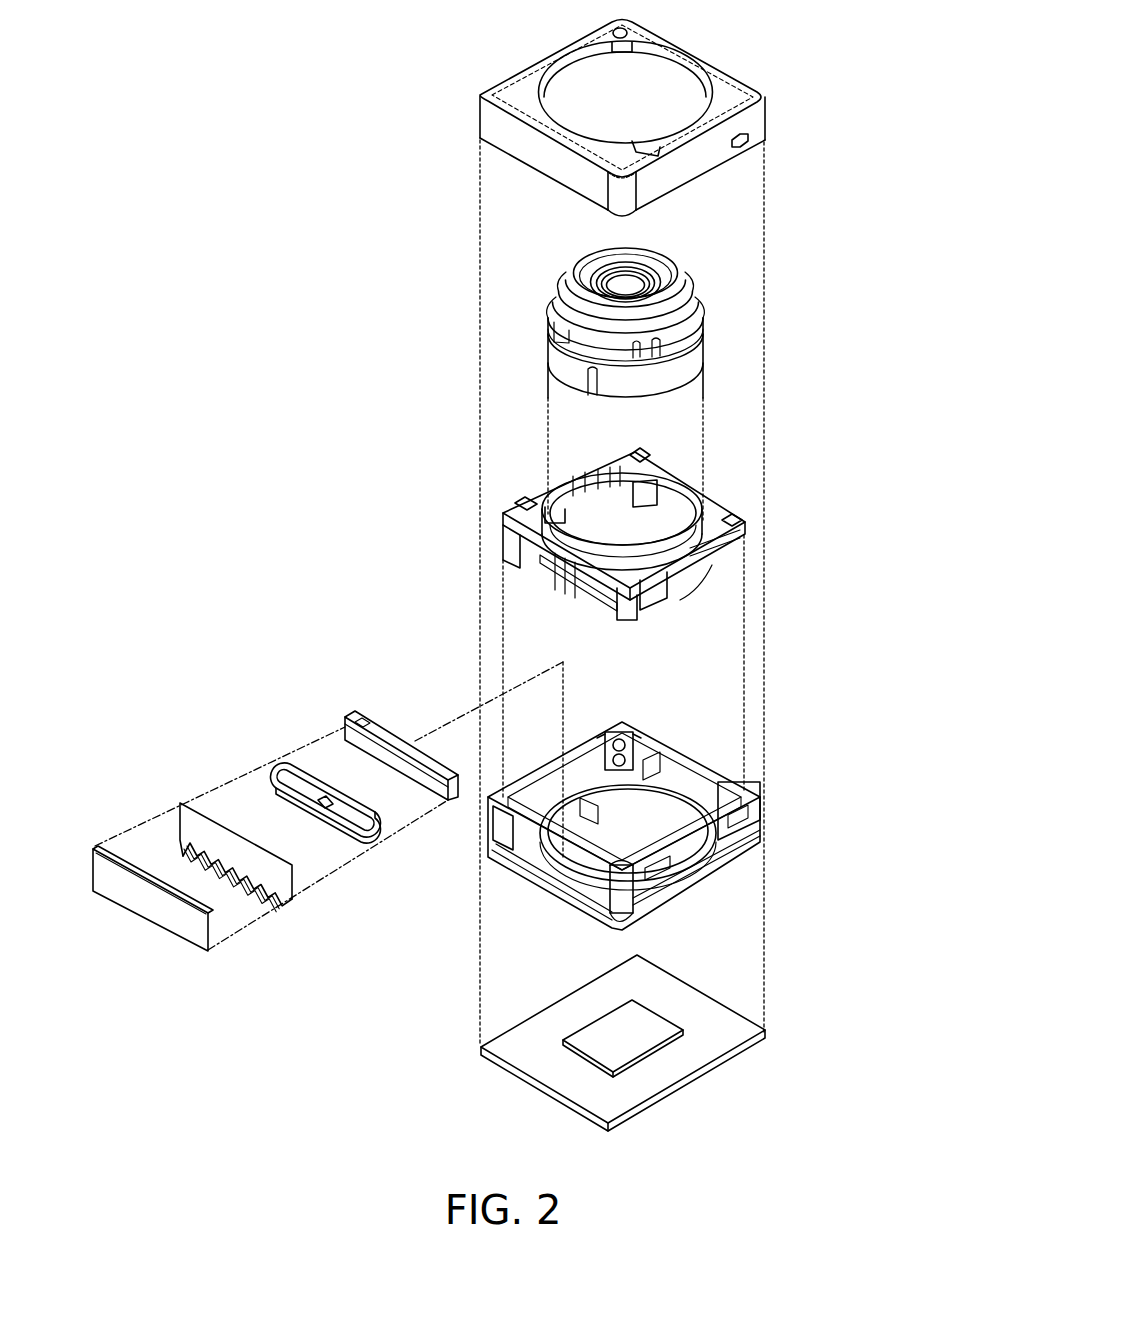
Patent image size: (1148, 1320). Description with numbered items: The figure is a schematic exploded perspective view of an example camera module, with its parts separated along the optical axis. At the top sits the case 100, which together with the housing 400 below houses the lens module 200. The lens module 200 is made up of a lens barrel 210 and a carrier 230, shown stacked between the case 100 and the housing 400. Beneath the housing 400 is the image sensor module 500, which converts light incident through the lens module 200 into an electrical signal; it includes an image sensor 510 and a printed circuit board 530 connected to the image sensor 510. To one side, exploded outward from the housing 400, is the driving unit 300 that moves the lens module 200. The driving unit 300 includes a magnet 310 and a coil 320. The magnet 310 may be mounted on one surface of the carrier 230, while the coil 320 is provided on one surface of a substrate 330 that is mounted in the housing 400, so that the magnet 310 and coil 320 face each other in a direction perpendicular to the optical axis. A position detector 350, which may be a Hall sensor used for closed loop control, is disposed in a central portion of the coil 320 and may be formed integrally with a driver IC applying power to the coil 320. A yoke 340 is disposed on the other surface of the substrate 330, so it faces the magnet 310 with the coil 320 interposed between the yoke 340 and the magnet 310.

The case 100 is at (723, 82).
The lens module 200 is at (852, 332).
The lens barrel 210 is at (703, 344).
The carrier 230 is at (730, 498).
The driving unit 300 is at (335, 672).
The magnet 310 is at (350, 735).
The coil 320 is at (307, 801).
The substrate 330 is at (182, 812).
The yoke 340 is at (112, 862).
The position detector 350 is at (327, 810).
The housing 400 is at (732, 873).
The image sensor module 500 is at (852, 1036).
The image sensor 510 is at (683, 1031).
The printed circuit board 530 is at (673, 1072).